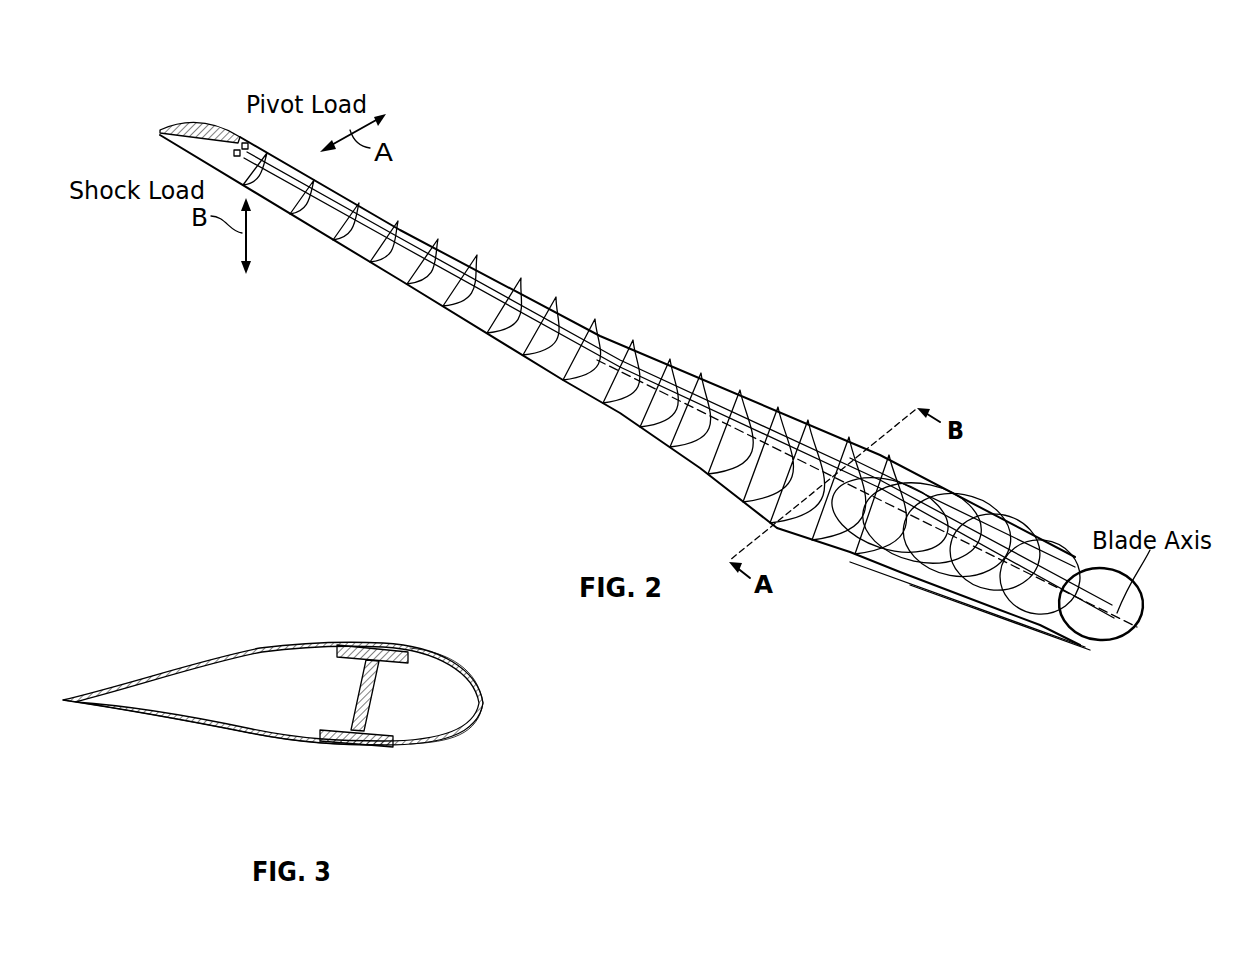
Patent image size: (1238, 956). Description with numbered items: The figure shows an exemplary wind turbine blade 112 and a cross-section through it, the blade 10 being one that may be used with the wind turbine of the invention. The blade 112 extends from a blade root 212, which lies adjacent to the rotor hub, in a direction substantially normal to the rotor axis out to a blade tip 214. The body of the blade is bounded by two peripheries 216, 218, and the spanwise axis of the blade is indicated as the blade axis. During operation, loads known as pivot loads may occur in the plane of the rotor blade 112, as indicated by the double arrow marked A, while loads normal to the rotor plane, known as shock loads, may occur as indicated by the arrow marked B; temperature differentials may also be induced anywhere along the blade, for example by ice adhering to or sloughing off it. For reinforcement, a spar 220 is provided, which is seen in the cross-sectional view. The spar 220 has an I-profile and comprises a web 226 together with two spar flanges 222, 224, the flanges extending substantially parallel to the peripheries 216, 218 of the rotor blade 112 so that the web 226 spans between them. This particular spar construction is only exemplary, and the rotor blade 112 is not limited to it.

In FIG. 2, the wind turbine blade 10 is at (784, 413).
In FIG. 2, the blade 112 is at (143, 64).
In FIG. 3, the blade 112 is at (152, 600).
In FIG. 2, the blade root 212 is at (1133, 623).
In FIG. 2, the blade tip 214 is at (190, 122).
In FIG. 2, the periphery 216 is at (628, 405).
In FIG. 3, the periphery 216 is at (203, 728).
In FIG. 2, the periphery 218 is at (598, 349).
In FIG. 3, the periphery 218 is at (143, 674).
In FIG. 3, the spar 220 is at (398, 698).
In FIG. 3, the spar flange 222 is at (373, 645).
In FIG. 3, the spar flange 224 is at (358, 745).
In FIG. 3, the web 226 is at (357, 683).